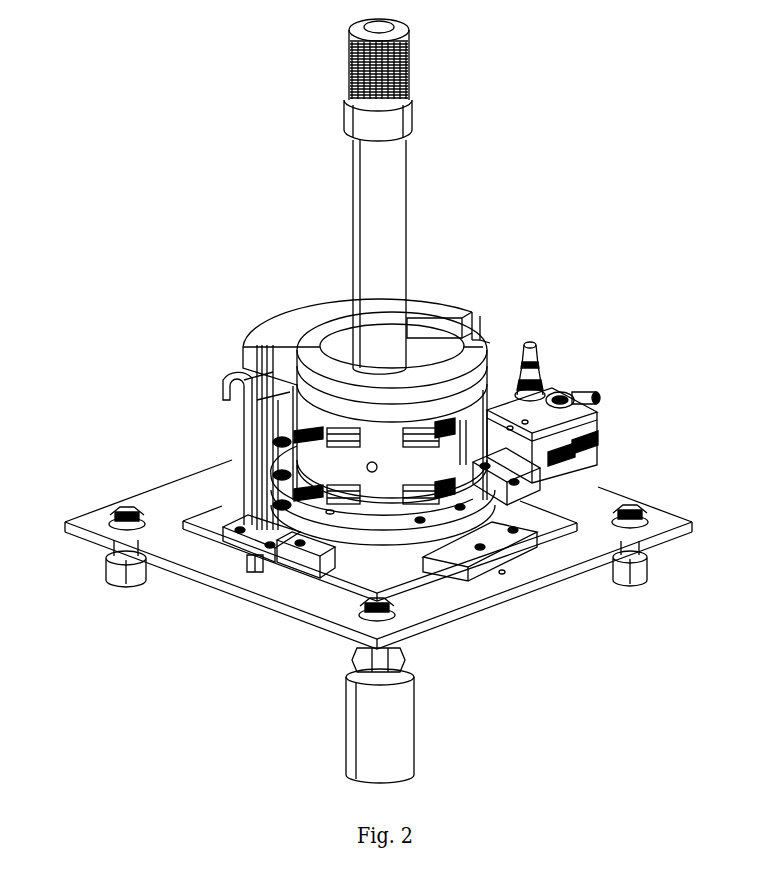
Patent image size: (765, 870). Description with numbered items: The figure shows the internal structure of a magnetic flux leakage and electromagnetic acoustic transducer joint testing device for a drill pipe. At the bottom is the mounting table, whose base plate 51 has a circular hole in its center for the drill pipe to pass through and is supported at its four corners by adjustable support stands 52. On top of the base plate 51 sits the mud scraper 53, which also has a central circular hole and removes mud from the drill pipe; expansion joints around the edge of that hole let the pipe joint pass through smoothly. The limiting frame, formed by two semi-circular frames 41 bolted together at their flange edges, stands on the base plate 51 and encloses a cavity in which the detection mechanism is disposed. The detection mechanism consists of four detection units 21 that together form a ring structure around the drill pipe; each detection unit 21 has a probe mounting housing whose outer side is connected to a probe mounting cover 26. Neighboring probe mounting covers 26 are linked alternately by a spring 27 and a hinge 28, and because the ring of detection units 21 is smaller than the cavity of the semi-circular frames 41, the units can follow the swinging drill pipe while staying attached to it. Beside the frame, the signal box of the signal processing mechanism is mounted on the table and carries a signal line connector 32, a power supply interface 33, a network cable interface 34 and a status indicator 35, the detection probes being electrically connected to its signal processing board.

The detection unit 21 is at (368, 388).
The probe mounting cover 26 is at (460, 515).
The spring 27 is at (305, 497).
The hinge 28 is at (410, 503).
The signal line connector 32 is at (604, 389).
The power supply interface 33 is at (540, 352).
The network cable interface 34 is at (570, 398).
The status indicator 35 is at (560, 424).
The semi-circular frame 41 is at (424, 309).
The base plate 51 is at (192, 490).
The adjustable support stand 52 is at (116, 562).
The mud scraper 53 is at (222, 532).